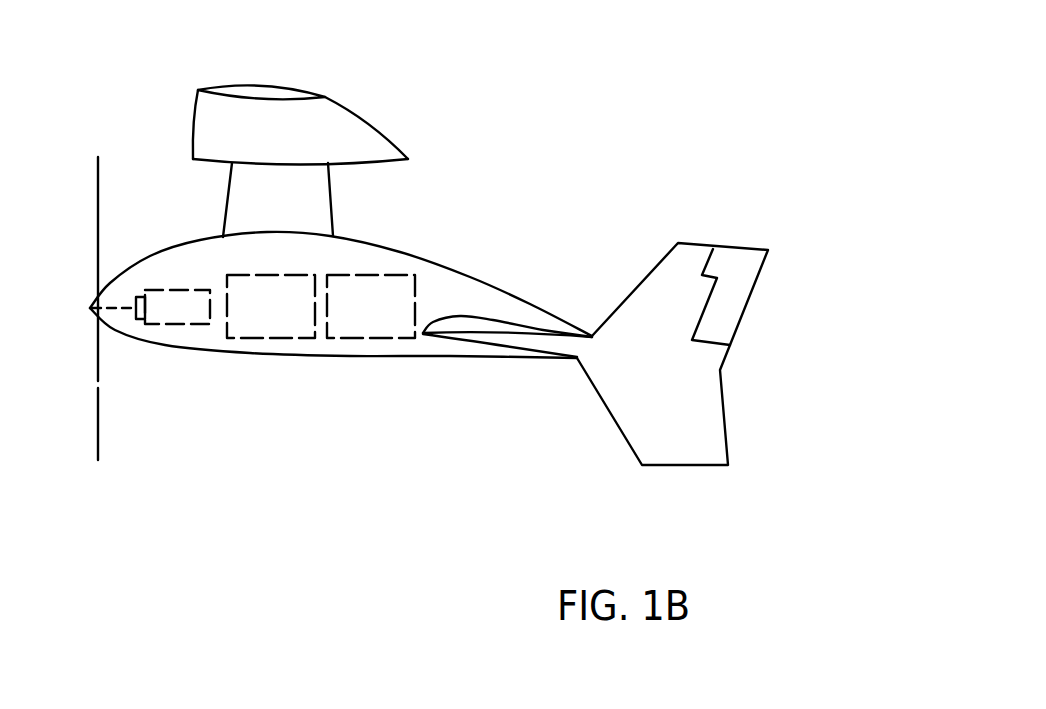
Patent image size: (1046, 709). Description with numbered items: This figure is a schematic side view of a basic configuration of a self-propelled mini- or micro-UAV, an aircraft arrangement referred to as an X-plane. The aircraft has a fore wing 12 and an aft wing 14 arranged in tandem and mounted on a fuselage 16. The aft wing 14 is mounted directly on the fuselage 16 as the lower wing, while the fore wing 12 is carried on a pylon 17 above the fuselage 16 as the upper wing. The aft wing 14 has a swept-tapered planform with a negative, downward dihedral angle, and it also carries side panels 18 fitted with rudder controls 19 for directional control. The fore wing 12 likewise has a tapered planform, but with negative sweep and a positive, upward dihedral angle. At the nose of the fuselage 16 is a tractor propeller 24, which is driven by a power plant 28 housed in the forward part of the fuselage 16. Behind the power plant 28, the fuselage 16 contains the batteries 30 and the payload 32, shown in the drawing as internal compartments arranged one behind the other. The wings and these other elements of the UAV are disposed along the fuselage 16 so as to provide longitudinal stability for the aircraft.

The fore wing 12 is at (530, 340).
The aft wing 14 is at (243, 88).
The fuselage 16 is at (337, 355).
The pylon 17 is at (308, 183).
The side panels 18 is at (682, 395).
The rudder controls 19 is at (735, 290).
The tractor propeller 24 is at (98, 388).
The power plant 28 is at (192, 322).
The batteries 30 is at (253, 320).
The payload 32 is at (353, 320).